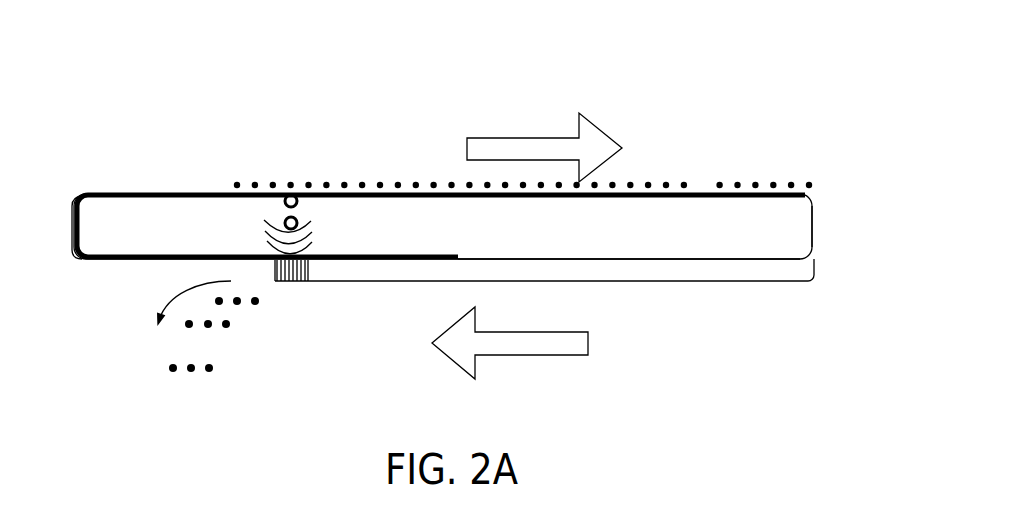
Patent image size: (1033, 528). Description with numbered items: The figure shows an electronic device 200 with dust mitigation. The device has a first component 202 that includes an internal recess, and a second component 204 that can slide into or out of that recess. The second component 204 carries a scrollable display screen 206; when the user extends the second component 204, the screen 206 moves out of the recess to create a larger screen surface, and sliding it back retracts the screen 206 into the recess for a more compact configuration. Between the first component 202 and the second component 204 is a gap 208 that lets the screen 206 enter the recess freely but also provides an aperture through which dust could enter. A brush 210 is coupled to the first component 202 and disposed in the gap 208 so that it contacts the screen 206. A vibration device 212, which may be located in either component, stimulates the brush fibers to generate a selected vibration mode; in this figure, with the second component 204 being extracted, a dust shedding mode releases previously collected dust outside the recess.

The electronic device 200 is at (138, 56).
The first component 202 is at (755, 282).
The second component 204 is at (812, 228).
The scrollable display screen 206 is at (133, 193).
The gap 208 is at (370, 272).
The brush 210 is at (298, 292).
The vibration device 212 is at (298, 218).